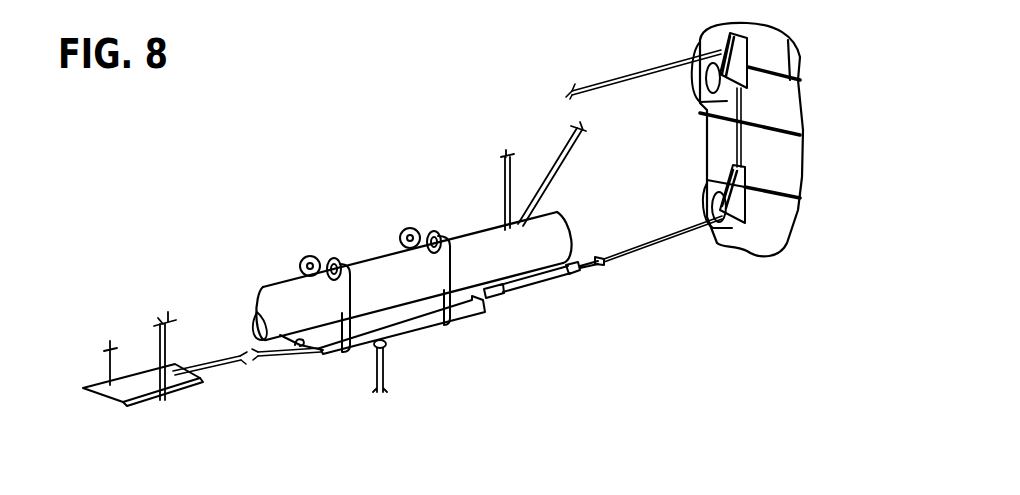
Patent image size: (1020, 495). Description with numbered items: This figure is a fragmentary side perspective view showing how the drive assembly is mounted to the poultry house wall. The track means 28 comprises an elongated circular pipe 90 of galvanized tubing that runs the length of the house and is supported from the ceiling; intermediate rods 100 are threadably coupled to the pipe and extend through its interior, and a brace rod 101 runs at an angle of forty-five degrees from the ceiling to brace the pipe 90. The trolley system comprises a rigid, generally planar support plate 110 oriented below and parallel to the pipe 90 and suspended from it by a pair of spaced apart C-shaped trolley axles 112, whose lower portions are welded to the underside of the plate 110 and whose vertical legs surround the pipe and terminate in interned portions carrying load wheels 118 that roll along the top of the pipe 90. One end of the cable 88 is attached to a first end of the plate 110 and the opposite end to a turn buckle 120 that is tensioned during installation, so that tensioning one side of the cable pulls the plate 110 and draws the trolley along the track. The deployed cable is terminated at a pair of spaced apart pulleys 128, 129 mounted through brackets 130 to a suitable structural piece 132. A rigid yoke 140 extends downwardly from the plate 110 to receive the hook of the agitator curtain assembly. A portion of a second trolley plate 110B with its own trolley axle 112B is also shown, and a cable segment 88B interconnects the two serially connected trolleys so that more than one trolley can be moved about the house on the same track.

The track means 28 is at (318, 168).
The elongated circular pipe 90 is at (277, 290).
The load wheels 118 is at (303, 262).
The trolley axles 112 is at (342, 334).
The support plate 110 is at (413, 313).
The yoke 140 is at (391, 342).
The intermediate rods 100 is at (503, 185).
The brace rod 101 is at (556, 167).
The turn buckle 120 is at (570, 280).
The cable 88 is at (663, 241).
The pulley 128 is at (694, 101).
The pulley 129 is at (707, 212).
The brackets 130 is at (740, 207).
The structural piece 132 is at (797, 185).
The trolley plate 110B is at (136, 388).
The trolley axle 112B is at (166, 343).
The cable segment 88B is at (222, 374).